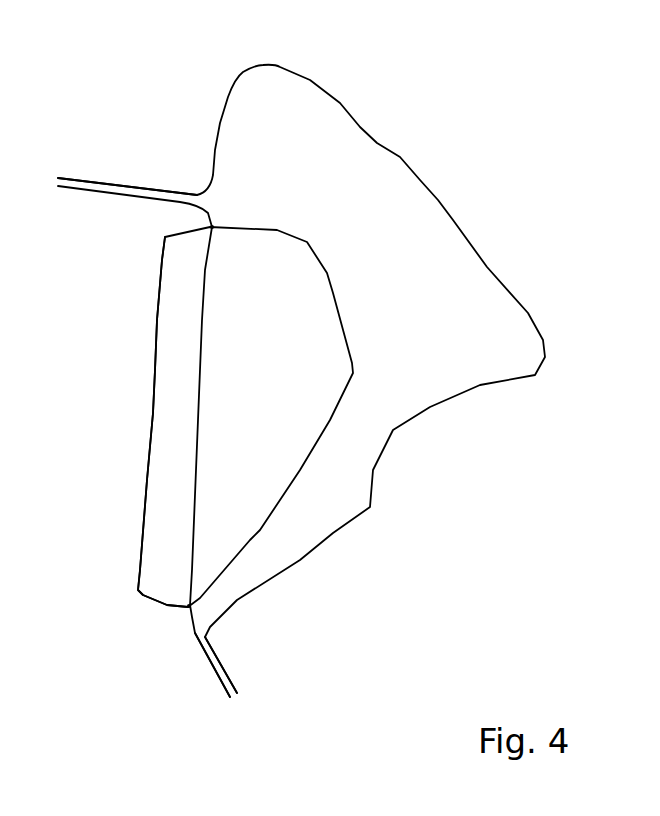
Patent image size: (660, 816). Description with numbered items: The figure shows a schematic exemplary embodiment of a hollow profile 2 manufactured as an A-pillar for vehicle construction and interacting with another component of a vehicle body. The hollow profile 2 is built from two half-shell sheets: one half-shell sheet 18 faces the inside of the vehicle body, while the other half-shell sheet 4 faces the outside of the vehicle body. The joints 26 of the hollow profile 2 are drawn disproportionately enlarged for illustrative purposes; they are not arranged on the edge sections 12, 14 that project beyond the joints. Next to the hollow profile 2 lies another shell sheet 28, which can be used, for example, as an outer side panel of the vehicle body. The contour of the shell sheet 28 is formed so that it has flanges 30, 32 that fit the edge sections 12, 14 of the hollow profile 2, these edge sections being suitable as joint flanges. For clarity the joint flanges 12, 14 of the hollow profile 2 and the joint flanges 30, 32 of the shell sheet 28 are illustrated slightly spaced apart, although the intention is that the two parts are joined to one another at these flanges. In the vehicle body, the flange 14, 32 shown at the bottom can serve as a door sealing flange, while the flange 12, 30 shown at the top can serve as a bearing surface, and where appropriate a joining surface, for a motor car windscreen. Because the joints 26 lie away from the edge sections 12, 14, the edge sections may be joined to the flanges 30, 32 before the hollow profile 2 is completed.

The hollow profile 2 is at (301, 380).
The half-shell sheet 4 is at (335, 298).
The edge section 12 is at (135, 200).
The edge section 14 is at (215, 672).
The half-shell sheet 18 is at (152, 425).
The joint 26 is at (212, 227).
The shell sheet 28 is at (370, 508).
The flange 30 is at (110, 187).
The flange 32 is at (225, 667).